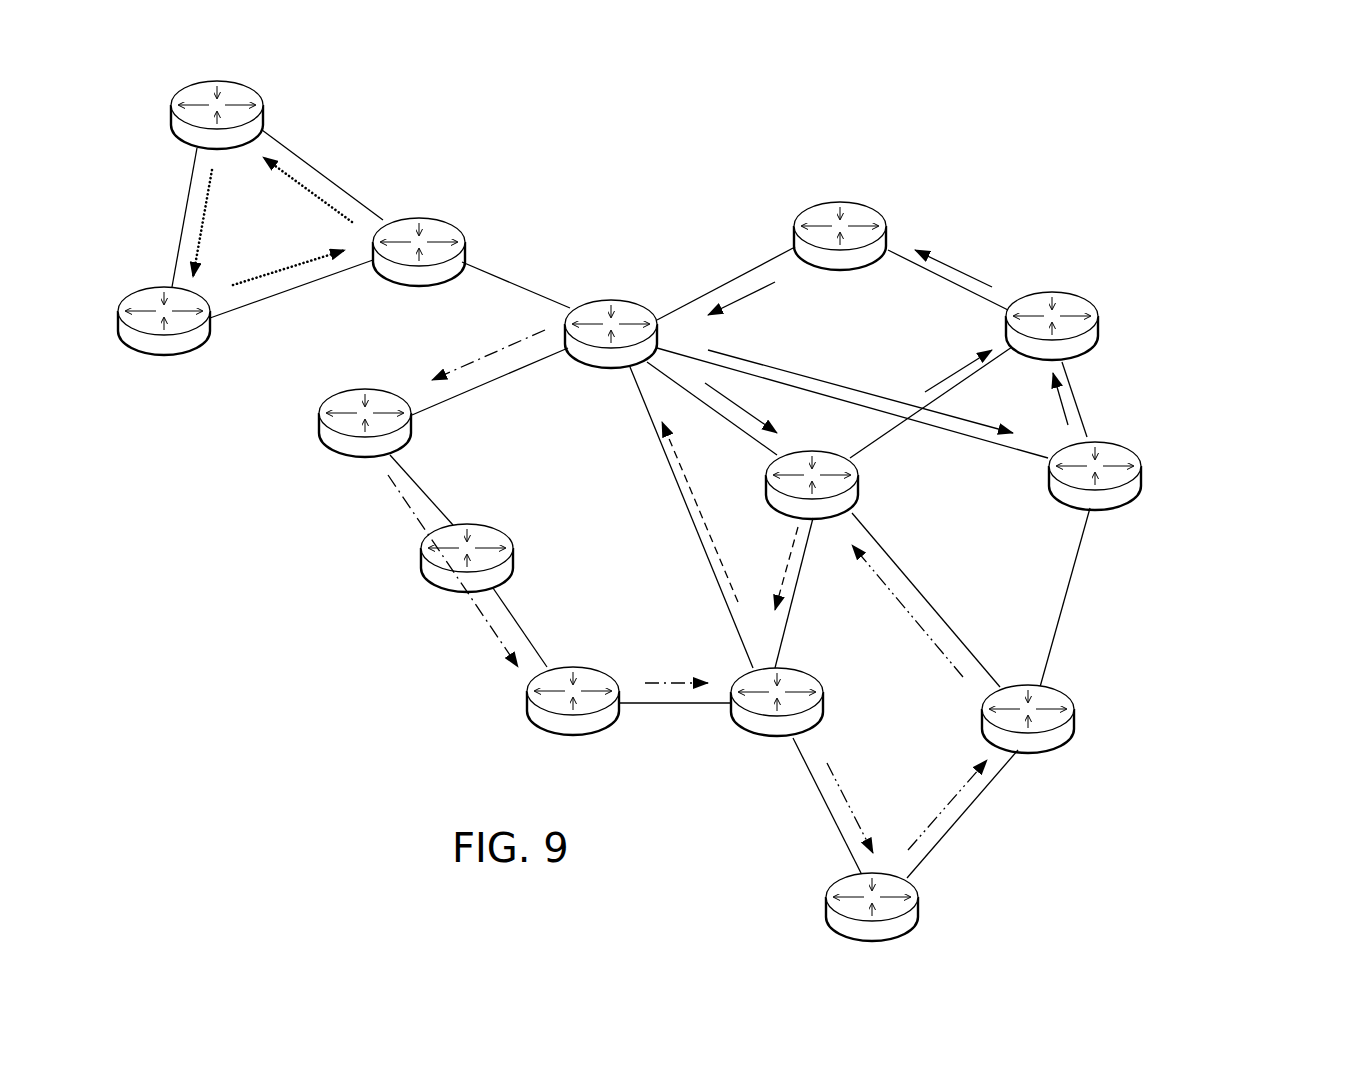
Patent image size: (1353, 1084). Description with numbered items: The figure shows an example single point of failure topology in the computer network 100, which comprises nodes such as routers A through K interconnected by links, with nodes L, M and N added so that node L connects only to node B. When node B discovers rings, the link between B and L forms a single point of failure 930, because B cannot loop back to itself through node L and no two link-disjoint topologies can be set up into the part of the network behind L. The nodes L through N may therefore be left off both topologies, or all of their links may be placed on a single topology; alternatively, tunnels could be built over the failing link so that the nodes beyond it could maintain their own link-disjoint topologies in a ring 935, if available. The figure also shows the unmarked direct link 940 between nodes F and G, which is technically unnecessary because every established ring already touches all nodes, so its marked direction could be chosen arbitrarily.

The computer network 100 is at (1167, 232).
The single point of failure 930 is at (581, 297).
The ring 935 is at (313, 193).
The direct unmarked link 940 is at (1060, 680).